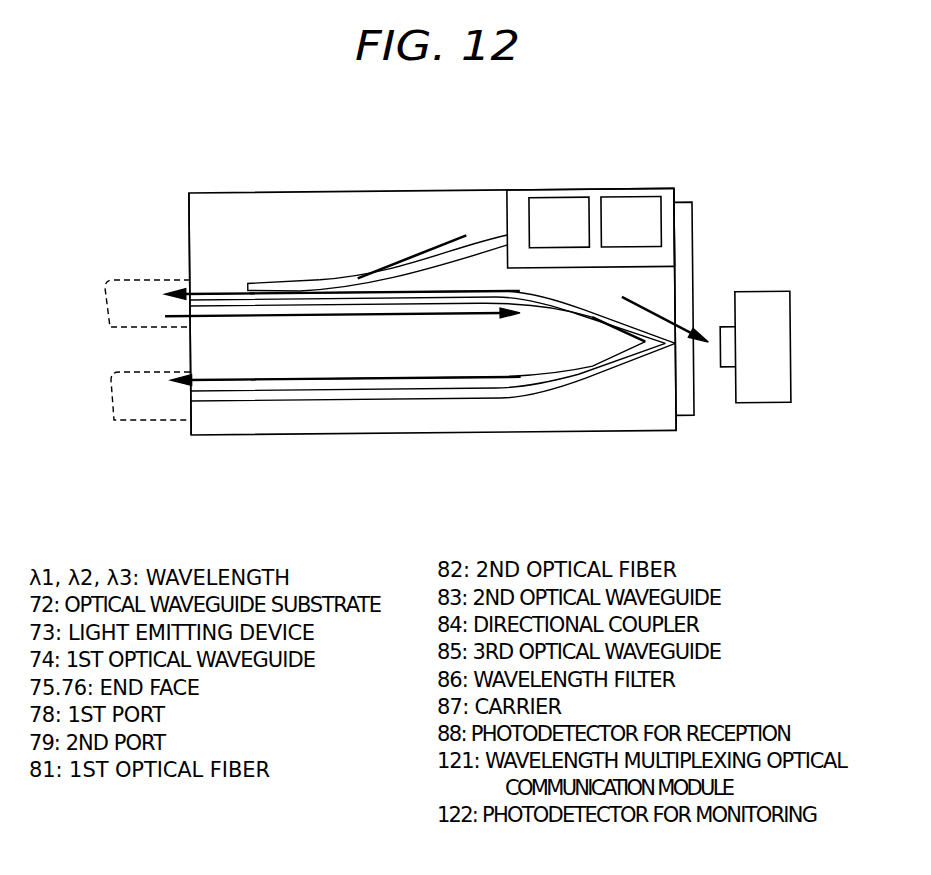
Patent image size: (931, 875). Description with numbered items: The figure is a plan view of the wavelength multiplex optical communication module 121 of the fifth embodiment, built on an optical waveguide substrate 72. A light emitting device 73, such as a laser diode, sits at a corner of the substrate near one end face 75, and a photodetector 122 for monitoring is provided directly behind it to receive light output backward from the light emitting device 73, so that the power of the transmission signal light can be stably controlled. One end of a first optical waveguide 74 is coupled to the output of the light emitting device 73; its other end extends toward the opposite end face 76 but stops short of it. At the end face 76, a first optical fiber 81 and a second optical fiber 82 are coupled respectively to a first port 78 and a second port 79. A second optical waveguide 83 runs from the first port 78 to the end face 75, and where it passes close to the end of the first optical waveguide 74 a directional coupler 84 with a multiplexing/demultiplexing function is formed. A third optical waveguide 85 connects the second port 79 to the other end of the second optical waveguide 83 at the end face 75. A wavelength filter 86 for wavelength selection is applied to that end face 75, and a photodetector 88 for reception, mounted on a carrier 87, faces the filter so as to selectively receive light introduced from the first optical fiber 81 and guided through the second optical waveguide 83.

The optical waveguide substrate 72 is at (311, 207).
The light emitting device 73 is at (548, 200).
The first optical waveguide 74 is at (482, 238).
The end face 75 is at (690, 228).
The end face 76 is at (190, 222).
The first port 78 is at (190, 287).
The second port 79 is at (190, 402).
The first optical fiber 81 is at (152, 278).
The second optical fiber 82 is at (132, 371).
The second optical waveguide 83 is at (548, 294).
The directional coupler 84 is at (295, 283).
The third optical waveguide 85 is at (440, 400).
The wavelength filter 86 is at (686, 418).
The carrier 87 is at (760, 292).
The photodetector for reception 88 is at (728, 365).
The wavelength multiplex optical communication module 121 is at (732, 180).
The photodetector for monitoring 122 is at (612, 200).